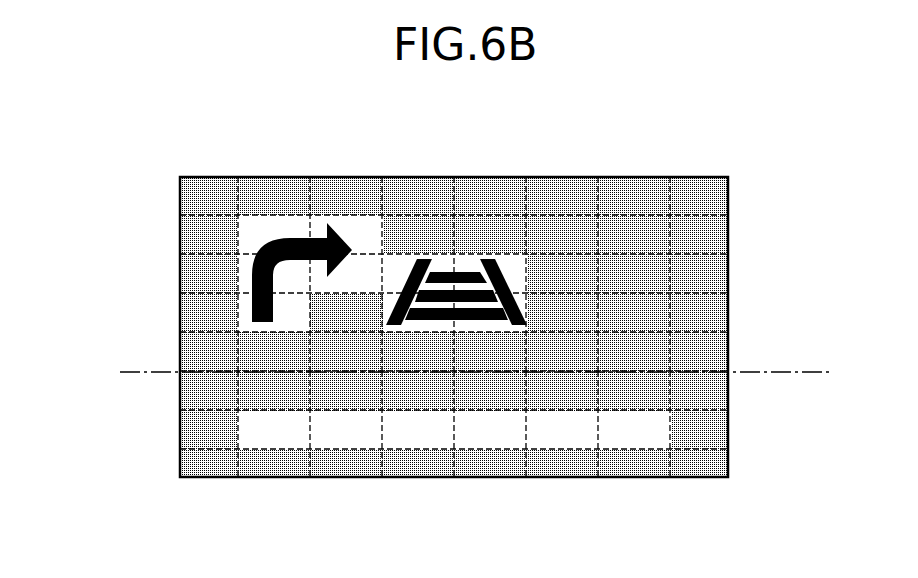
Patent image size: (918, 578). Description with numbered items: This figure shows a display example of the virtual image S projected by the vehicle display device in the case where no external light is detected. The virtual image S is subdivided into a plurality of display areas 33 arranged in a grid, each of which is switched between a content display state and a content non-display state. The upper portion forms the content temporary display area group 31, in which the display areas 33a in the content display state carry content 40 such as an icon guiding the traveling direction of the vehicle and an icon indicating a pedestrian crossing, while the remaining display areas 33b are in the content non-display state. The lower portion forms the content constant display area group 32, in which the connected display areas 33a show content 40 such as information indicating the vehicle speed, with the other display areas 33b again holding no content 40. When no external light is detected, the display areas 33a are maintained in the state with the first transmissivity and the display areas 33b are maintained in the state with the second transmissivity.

The virtual image S is at (699, 144).
The content temporary display area group 31 is at (818, 177).
The content constant display area group 32 is at (818, 370).
The display areas 33 is at (618, 188).
The display areas in the content display state 33a is at (248, 203).
The display areas in the content non-display state 33b is at (442, 178).
The content 40 is at (284, 226).